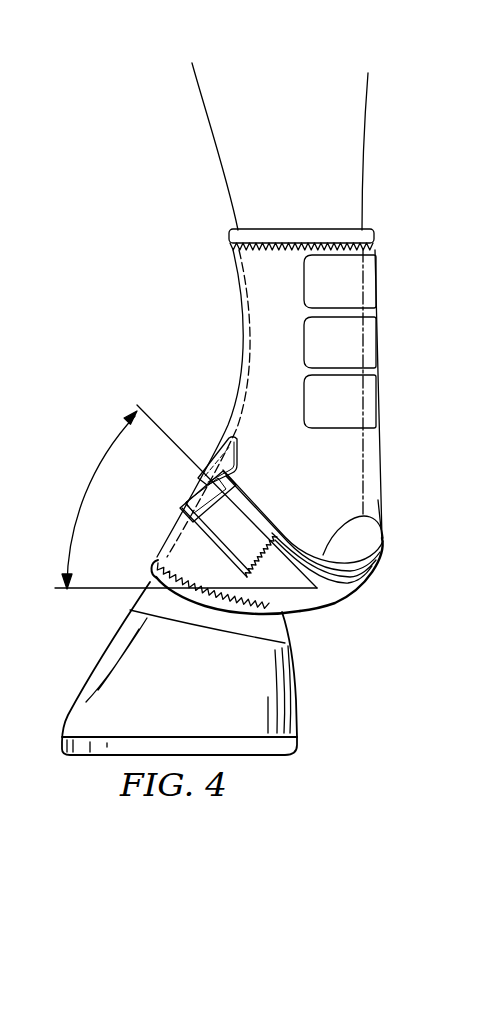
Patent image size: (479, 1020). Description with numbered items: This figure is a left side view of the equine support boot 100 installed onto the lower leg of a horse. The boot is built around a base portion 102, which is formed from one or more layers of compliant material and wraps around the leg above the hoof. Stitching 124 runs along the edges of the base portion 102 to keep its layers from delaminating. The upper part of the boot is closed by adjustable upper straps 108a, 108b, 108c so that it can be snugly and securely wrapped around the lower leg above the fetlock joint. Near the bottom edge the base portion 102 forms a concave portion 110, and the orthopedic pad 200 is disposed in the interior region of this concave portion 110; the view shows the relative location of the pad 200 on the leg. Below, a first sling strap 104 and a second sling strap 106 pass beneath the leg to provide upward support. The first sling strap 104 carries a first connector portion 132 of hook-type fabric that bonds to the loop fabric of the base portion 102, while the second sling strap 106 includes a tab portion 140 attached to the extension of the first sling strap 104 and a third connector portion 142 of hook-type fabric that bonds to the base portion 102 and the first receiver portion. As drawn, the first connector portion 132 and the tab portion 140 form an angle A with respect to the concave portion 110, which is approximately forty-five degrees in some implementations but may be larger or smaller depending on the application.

The equine support boot 100 is at (186, 318).
The base portion 102 is at (258, 288).
The first sling strap 104 is at (262, 505).
The second sling strap 106 is at (355, 585).
The upper strap 108a is at (378, 282).
The upper strap 108b is at (378, 338).
The upper strap 108c is at (378, 398).
The concave portion 110 is at (395, 514).
The stitching 124 is at (374, 245).
The first connector portion 132 is at (192, 523).
The tab portion 140 is at (317, 601).
The third connector portion 142 is at (200, 465).
The orthopedic pad 200 is at (360, 540).
The angle A is at (88, 490).